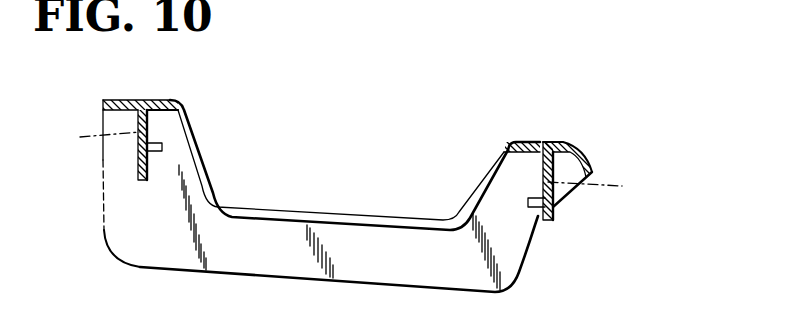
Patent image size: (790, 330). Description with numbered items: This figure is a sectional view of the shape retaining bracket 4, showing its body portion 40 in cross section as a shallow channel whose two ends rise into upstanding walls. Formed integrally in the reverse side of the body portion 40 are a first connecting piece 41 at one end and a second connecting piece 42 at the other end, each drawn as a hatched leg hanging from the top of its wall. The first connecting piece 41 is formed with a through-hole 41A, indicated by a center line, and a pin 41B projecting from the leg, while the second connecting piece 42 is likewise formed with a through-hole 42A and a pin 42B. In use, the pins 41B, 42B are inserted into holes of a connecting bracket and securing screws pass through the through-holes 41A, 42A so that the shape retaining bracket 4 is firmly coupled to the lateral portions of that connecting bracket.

The shape retaining bracket 4 is at (553, 124).
The body portion 40 is at (348, 214).
The first connecting piece 41 is at (568, 194).
The through-hole 41A is at (610, 198).
The pin 41B is at (535, 222).
The second connecting piece 42 is at (137, 173).
The through-hole 42A is at (82, 147).
The pin 42B is at (163, 147).